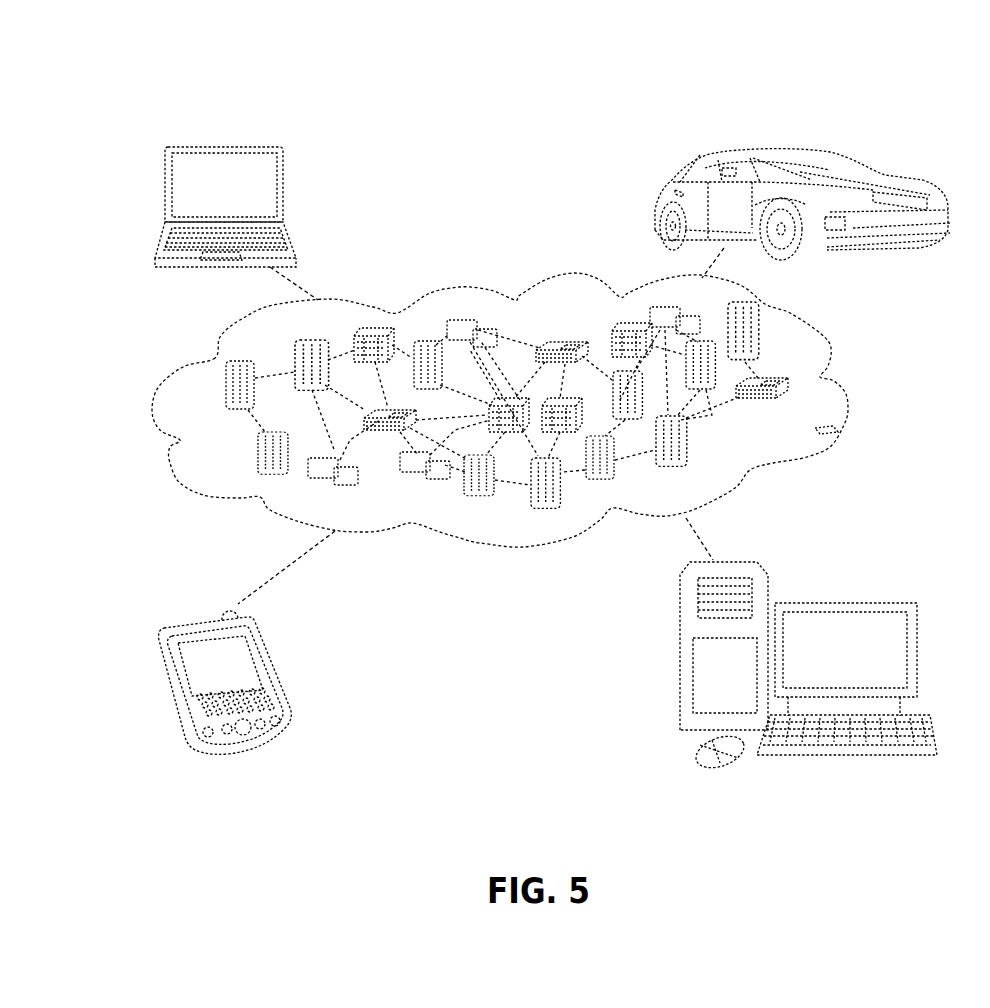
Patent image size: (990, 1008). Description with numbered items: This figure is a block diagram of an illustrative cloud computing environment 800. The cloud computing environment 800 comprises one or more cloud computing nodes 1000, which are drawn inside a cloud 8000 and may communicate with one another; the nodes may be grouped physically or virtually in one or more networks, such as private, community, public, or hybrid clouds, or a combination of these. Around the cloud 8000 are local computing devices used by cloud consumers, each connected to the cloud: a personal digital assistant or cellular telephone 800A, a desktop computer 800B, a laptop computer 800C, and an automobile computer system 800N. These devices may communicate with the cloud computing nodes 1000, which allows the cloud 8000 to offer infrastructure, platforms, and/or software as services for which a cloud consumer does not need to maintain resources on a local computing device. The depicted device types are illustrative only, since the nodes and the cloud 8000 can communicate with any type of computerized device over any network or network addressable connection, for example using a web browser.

The cloud computing environment 800 is at (99, 58).
The personal digital assistant or cellular telephone 800A is at (281, 668).
The desktop computer 800B is at (842, 603).
The laptop computer 800C is at (288, 195).
The automobile computer system 800N is at (658, 206).
The cloud 8000 is at (846, 386).
The cloud computing nodes 1000 is at (800, 416).